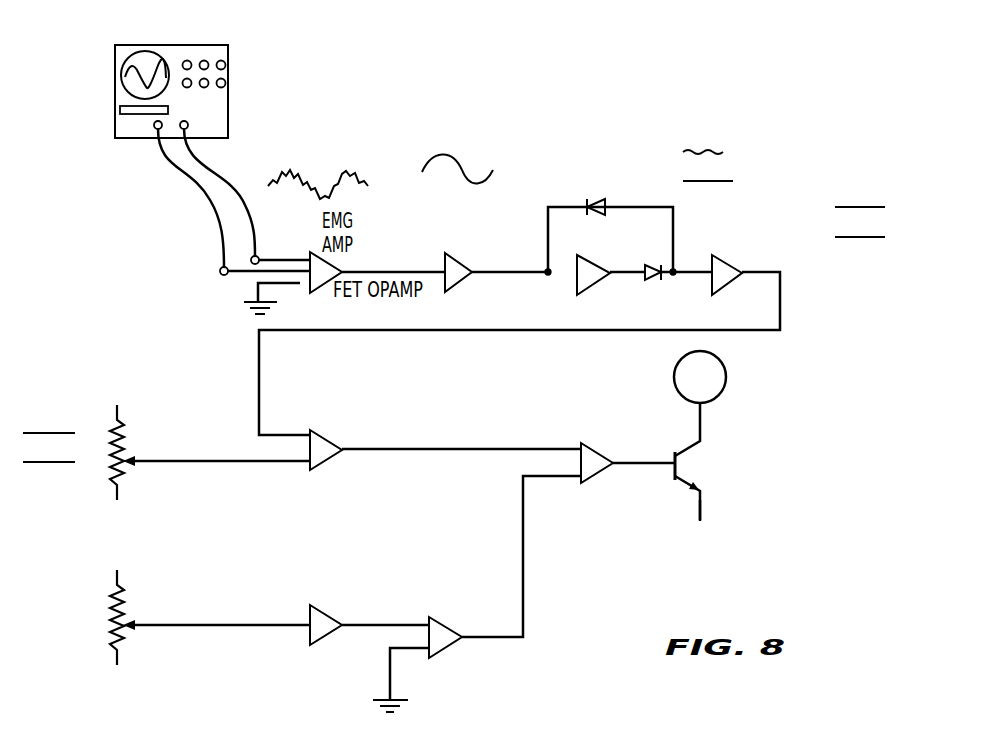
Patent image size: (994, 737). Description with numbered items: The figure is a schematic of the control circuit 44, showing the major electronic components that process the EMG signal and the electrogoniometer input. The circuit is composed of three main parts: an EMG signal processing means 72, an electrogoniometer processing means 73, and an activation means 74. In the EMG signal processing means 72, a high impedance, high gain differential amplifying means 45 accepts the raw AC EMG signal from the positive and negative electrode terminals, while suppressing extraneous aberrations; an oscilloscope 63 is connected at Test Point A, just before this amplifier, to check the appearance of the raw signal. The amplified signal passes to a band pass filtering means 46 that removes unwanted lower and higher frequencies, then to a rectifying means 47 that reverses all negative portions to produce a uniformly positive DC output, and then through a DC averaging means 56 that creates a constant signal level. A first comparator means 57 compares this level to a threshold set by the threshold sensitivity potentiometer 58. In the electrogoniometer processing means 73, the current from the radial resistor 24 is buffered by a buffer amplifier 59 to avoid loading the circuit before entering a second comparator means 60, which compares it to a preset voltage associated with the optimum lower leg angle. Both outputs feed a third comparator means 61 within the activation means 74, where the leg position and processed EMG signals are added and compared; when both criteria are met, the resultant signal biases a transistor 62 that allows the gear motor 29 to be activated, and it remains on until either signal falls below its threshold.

The oscilloscope 63 is at (115, 70).
The control circuit 44 is at (101, 201).
The EMG signal processing means 72 is at (120, 249).
The differential amplifying means 45 is at (314, 158).
The band pass filtering means 46 is at (463, 143).
The rectifying means 47 is at (591, 138).
The DC averaging means 56 is at (762, 191).
The first comparator means 57 is at (333, 463).
The threshold sensitivity potentiometer 58 is at (106, 440).
The electrogoniometer processing means 73 is at (95, 534).
The radial resistor 24 is at (108, 625).
The buffer amplifier 59 is at (306, 647).
The second comparator means 60 is at (444, 655).
The third comparator means 61 is at (596, 483).
The activation means 74 is at (735, 455).
The transistor 62 is at (703, 500).
The gear motor 29 is at (720, 397).